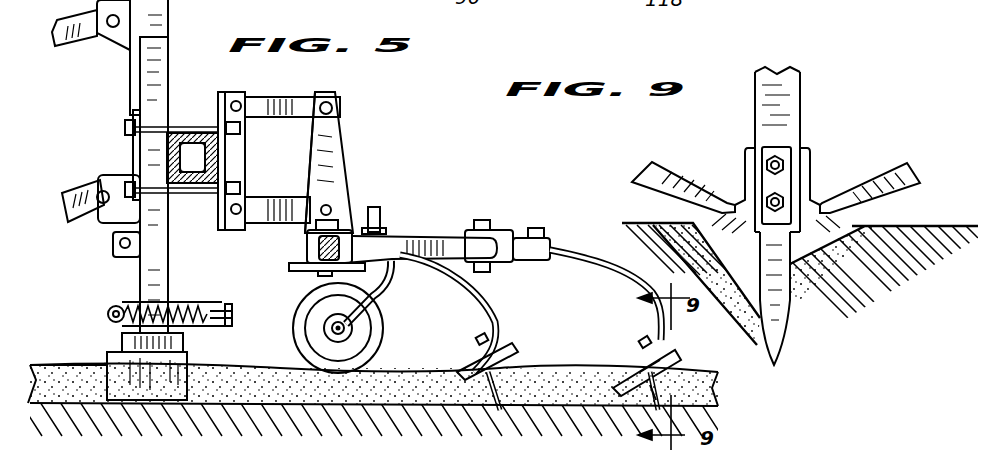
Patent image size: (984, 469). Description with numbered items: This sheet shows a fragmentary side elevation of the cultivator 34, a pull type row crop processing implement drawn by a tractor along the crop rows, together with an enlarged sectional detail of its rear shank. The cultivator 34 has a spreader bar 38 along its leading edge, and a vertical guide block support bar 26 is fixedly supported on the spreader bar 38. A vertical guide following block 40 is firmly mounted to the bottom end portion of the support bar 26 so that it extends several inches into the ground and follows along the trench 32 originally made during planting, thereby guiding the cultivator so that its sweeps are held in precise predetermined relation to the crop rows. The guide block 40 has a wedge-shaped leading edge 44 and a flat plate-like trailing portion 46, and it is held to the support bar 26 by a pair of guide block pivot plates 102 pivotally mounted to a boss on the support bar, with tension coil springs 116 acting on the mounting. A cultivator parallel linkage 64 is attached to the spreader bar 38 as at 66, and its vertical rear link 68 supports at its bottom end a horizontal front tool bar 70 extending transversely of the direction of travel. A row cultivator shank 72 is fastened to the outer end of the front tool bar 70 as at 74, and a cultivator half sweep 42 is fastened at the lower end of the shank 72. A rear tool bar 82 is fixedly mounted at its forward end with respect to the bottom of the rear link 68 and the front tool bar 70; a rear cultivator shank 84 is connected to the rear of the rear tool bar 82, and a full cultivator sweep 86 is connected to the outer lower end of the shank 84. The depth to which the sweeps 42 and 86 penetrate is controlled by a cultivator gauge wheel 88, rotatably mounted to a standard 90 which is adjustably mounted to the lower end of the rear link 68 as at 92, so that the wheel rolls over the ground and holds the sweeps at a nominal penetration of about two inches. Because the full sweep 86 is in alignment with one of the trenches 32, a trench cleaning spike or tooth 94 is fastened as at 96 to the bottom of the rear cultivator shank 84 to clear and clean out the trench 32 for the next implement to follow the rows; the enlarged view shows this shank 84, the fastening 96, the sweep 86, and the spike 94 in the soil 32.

In FIG. 5, the vertical guide block support bar 26 is at (157, 62).
In FIG. 5, the trench 32 is at (390, 395).
In FIG. 9, the trench 32 is at (783, 355).
In FIG. 5, the cultivator 34 is at (352, 130).
In FIG. 5, the spreader bar 38 is at (210, 133).
In FIG. 5, the vertical guide following block 40 is at (172, 373).
In FIG. 5, the cultivator half sweep 42 is at (485, 350).
In FIG. 5, the wedge-shaped leading edge 44 is at (112, 350).
In FIG. 5, the flat plate-like trailing portion 46 is at (128, 373).
In FIG. 5, the cultivator parallel linkage 64 is at (292, 108).
In FIG. 5, the attachment of parallel linkage to spreader bar 66 is at (233, 132).
In FIG. 5, the vertical rear link 68 is at (348, 165).
In FIG. 5, the horizontal front tool bar 70 is at (308, 243).
In FIG. 5, the row cultivator shank 72 is at (497, 296).
In FIG. 5, the fastening of row cultivator shank to front tool bar 74 is at (389, 270).
In FIG. 5, the rear tool bar 82 is at (448, 236).
In FIG. 5, the rear cultivator shank 84 is at (592, 250).
In FIG. 9, the rear cultivator shank 84 is at (800, 97).
In FIG. 5, the full cultivator sweep 86 is at (633, 370).
In FIG. 9, the full cultivator sweep 86 is at (707, 185).
In FIG. 5, the cultivator gauge wheel 88 is at (308, 305).
In FIG. 5, the standard 90 is at (378, 205).
In FIG. 5, the adjustable mounting of standard to rear link 92 is at (400, 222).
In FIG. 5, the trench cleaning spike or tooth 94 is at (650, 387).
In FIG. 9, the trench cleaning spike or tooth 94 is at (784, 299).
In FIG. 5, the fastening of trench cleaning spike to rear shank 96 is at (660, 352).
In FIG. 9, the fastening of trench cleaning spike to rear shank 96 is at (784, 166).
In FIG. 5, the guide block pivot plate 102 is at (167, 270).
In FIG. 5, the tension coil spring 116 is at (180, 305).